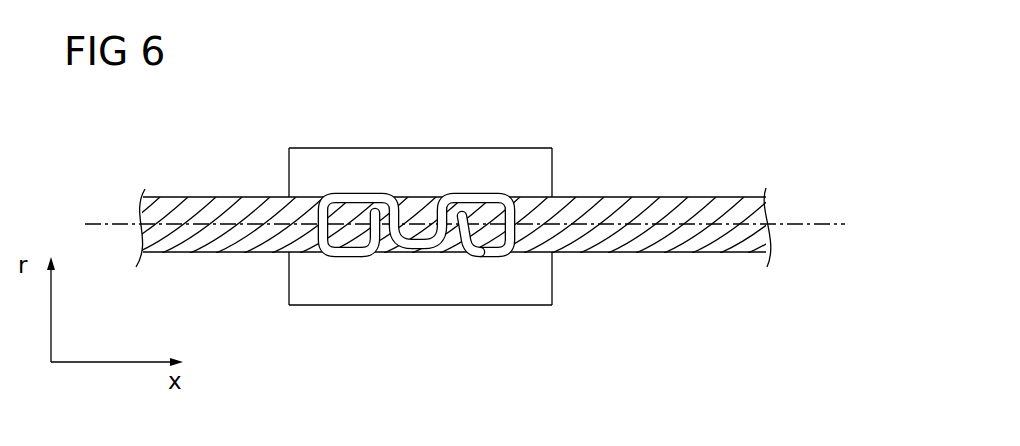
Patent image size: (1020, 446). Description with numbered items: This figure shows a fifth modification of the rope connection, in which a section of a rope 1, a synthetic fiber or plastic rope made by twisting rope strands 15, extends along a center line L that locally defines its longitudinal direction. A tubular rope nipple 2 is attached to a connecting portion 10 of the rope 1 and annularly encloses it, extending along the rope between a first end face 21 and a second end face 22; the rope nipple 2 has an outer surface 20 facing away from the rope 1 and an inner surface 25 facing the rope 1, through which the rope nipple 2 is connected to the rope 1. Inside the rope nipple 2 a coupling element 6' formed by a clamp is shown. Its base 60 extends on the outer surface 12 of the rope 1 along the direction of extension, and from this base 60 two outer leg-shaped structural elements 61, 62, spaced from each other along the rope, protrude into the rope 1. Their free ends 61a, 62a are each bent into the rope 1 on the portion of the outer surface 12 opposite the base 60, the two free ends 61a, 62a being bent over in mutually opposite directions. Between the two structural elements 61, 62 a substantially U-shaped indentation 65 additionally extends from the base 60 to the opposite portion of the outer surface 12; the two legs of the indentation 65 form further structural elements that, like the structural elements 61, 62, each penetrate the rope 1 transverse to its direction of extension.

The rope 1 is at (462, 216).
The rope nipple 2 is at (434, 229).
The coupling element 6' is at (398, 234).
The connecting portion 10 is at (553, 196).
The outer surface of the rope 12 is at (718, 253).
The rope strands 15 is at (644, 227).
The outer surface of the rope nipple 20 is at (439, 268).
The first end face 21 is at (288, 278).
The second end face 22 is at (556, 267).
The inner surface 25 is at (292, 199).
The base 60 is at (398, 231).
The first structural element 61 is at (313, 238).
The free end of first structural element 61a is at (368, 249).
The second structural element 62 is at (511, 255).
The free end of second structural element 62a is at (472, 254).
The U-shaped indentation 65 is at (418, 249).
The center line L is at (800, 222).